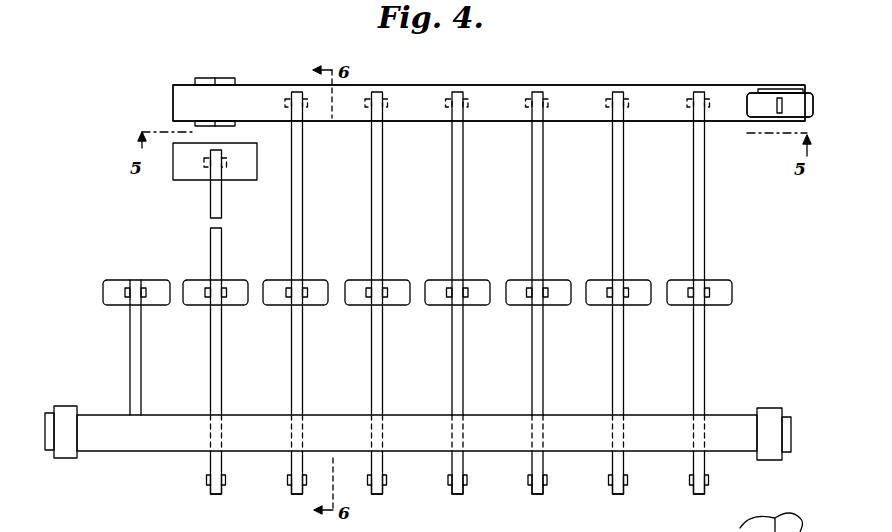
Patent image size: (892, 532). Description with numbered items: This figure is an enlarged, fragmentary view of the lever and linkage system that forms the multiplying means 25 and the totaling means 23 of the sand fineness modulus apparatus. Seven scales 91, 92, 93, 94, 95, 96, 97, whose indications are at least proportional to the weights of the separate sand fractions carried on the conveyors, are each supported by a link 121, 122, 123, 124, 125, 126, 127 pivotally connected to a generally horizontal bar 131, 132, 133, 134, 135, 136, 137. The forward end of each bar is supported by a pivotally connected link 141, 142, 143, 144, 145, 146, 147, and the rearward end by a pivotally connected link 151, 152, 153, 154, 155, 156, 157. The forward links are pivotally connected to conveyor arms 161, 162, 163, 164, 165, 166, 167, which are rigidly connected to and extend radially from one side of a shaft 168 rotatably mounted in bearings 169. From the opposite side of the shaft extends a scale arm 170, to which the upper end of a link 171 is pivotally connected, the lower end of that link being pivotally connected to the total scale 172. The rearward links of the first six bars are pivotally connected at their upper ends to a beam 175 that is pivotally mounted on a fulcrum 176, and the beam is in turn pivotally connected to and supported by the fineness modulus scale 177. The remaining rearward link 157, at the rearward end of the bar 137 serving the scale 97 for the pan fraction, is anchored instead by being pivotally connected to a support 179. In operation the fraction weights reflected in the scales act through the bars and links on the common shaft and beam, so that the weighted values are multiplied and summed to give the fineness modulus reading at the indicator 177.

The totaling means 23 is at (760, 92).
The multiplying means 25 is at (536, 80).
The scale 91 is at (720, 284).
The scale 92 is at (640, 284).
The scale 93 is at (558, 284).
The scale 94 is at (478, 284).
The scale 95 is at (395, 284).
The scale 96 is at (315, 284).
The scale 97 is at (235, 284).
The link 121 is at (697, 307).
The link 122 is at (616, 307).
The link 123 is at (535, 307).
The link 124 is at (455, 307).
The link 125 is at (375, 307).
The link 126 is at (295, 307).
The link 127 is at (214, 307).
The bar 131 is at (705, 381).
The bar 132 is at (624, 381).
The bar 133 is at (544, 381).
The bar 134 is at (464, 381).
The bar 135 is at (383, 381).
The bar 136 is at (303, 381).
The bar 137 is at (222, 381).
The link 141 is at (690, 488).
The link 142 is at (609, 488).
The link 143 is at (529, 488).
The link 144 is at (449, 488).
The link 145 is at (369, 488).
The link 146 is at (289, 488).
The link 147 is at (208, 488).
The link 151 is at (691, 124).
The link 152 is at (610, 124).
The link 153 is at (530, 124).
The link 154 is at (450, 124).
The link 155 is at (370, 124).
The link 156 is at (290, 124).
The link 157 is at (208, 176).
The conveyor arm 161 is at (705, 466).
The conveyor arm 162 is at (624, 466).
The conveyor arm 163 is at (543, 466).
The conveyor arm 164 is at (463, 466).
The conveyor arm 165 is at (383, 466).
The conveyor arm 166 is at (291, 468).
The conveyor arm 167 is at (210, 468).
The shaft 168 is at (110, 453).
The bearings 169 is at (70, 412).
The scale arm 170 is at (130, 348).
The link 171 is at (147, 288).
The total scale 172 is at (119, 283).
The beam 175 is at (455, 86).
The fulcrum 176 is at (215, 79).
The fineness modulus scale 177 is at (782, 93).
The support 179 is at (245, 182).